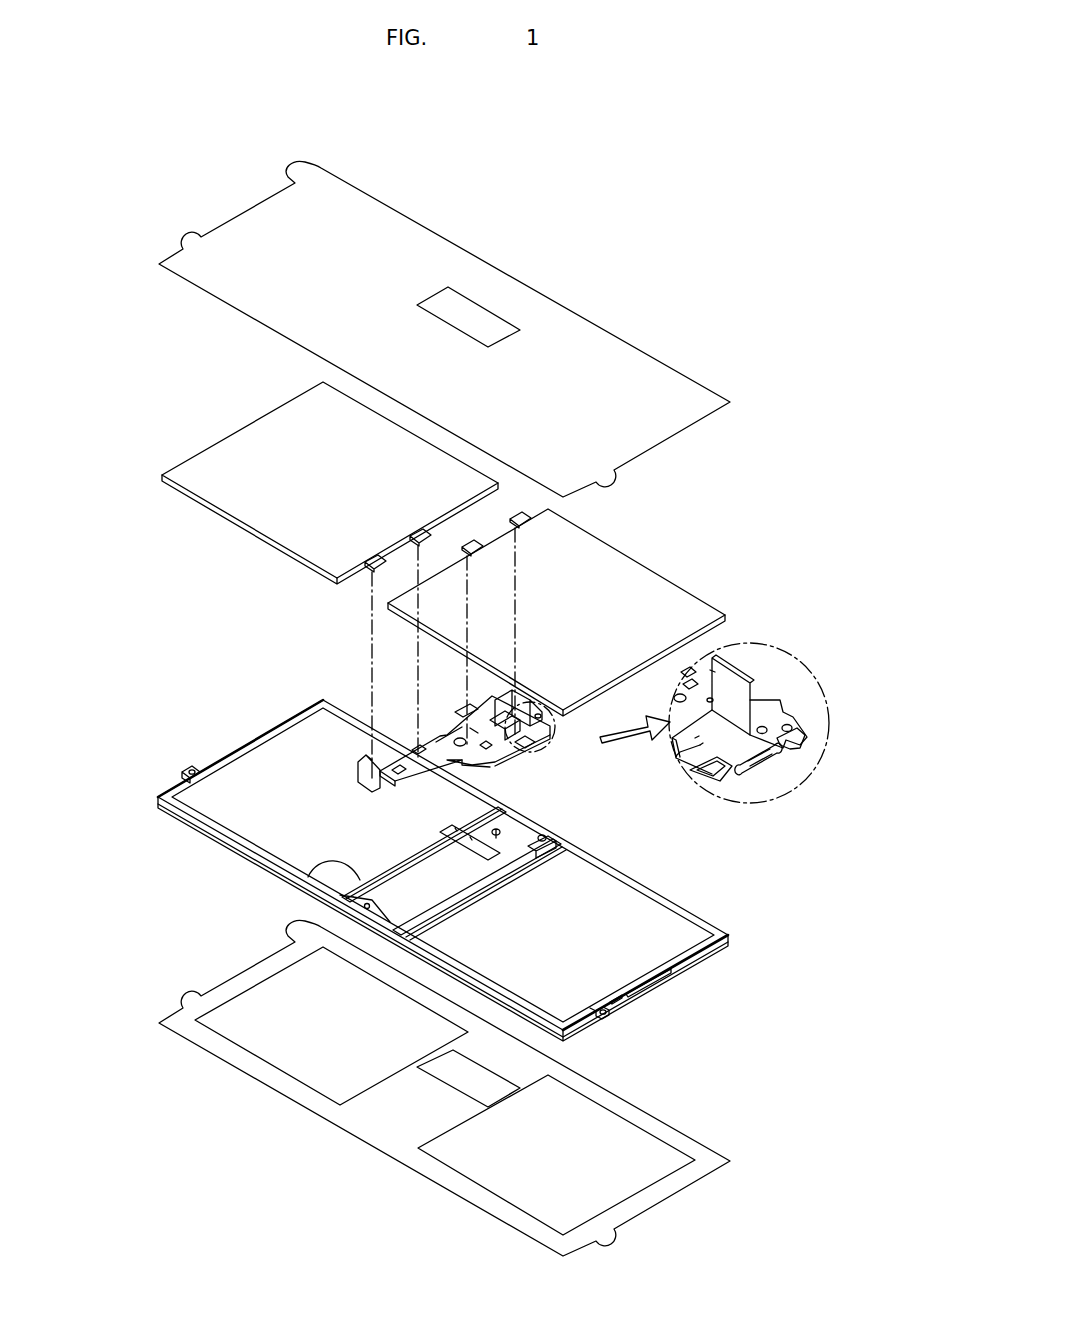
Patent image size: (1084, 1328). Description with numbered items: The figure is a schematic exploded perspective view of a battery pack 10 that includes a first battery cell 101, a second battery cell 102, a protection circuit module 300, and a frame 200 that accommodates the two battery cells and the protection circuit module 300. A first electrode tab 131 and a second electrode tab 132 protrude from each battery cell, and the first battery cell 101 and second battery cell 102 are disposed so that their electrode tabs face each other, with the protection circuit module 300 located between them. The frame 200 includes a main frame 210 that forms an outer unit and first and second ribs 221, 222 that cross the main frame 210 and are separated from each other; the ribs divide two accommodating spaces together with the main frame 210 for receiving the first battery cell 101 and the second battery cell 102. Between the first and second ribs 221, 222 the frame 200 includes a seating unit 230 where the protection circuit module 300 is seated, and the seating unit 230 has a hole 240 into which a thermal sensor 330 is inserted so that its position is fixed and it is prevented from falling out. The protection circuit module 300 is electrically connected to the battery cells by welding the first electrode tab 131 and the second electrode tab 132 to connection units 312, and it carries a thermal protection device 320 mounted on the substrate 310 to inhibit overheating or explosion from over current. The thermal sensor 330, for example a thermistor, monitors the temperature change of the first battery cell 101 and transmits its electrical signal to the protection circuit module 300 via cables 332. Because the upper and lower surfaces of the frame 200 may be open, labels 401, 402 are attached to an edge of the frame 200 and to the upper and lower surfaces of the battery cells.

The battery pack 10 is at (590, 216).
The first battery cell 101 is at (683, 597).
The second battery cell 102 is at (233, 447).
The first electrode tab 131 is at (380, 560).
The second electrode tab 132 is at (418, 535).
The frame 200 is at (209, 752).
The main frame 210 is at (692, 917).
The first rib 221 is at (427, 915).
The second rib 222 is at (338, 866).
The seating unit 230 is at (502, 868).
The hole 240 is at (536, 860).
The protection circuit module 300 is at (495, 767).
The substrate 310 is at (512, 702).
The connection unit 312 is at (375, 755).
The thermal protection device 320 is at (450, 703).
The thermal sensor 330 is at (755, 777).
The cables 332 is at (778, 762).
The label 401 is at (665, 372).
The label 402 is at (683, 1142).